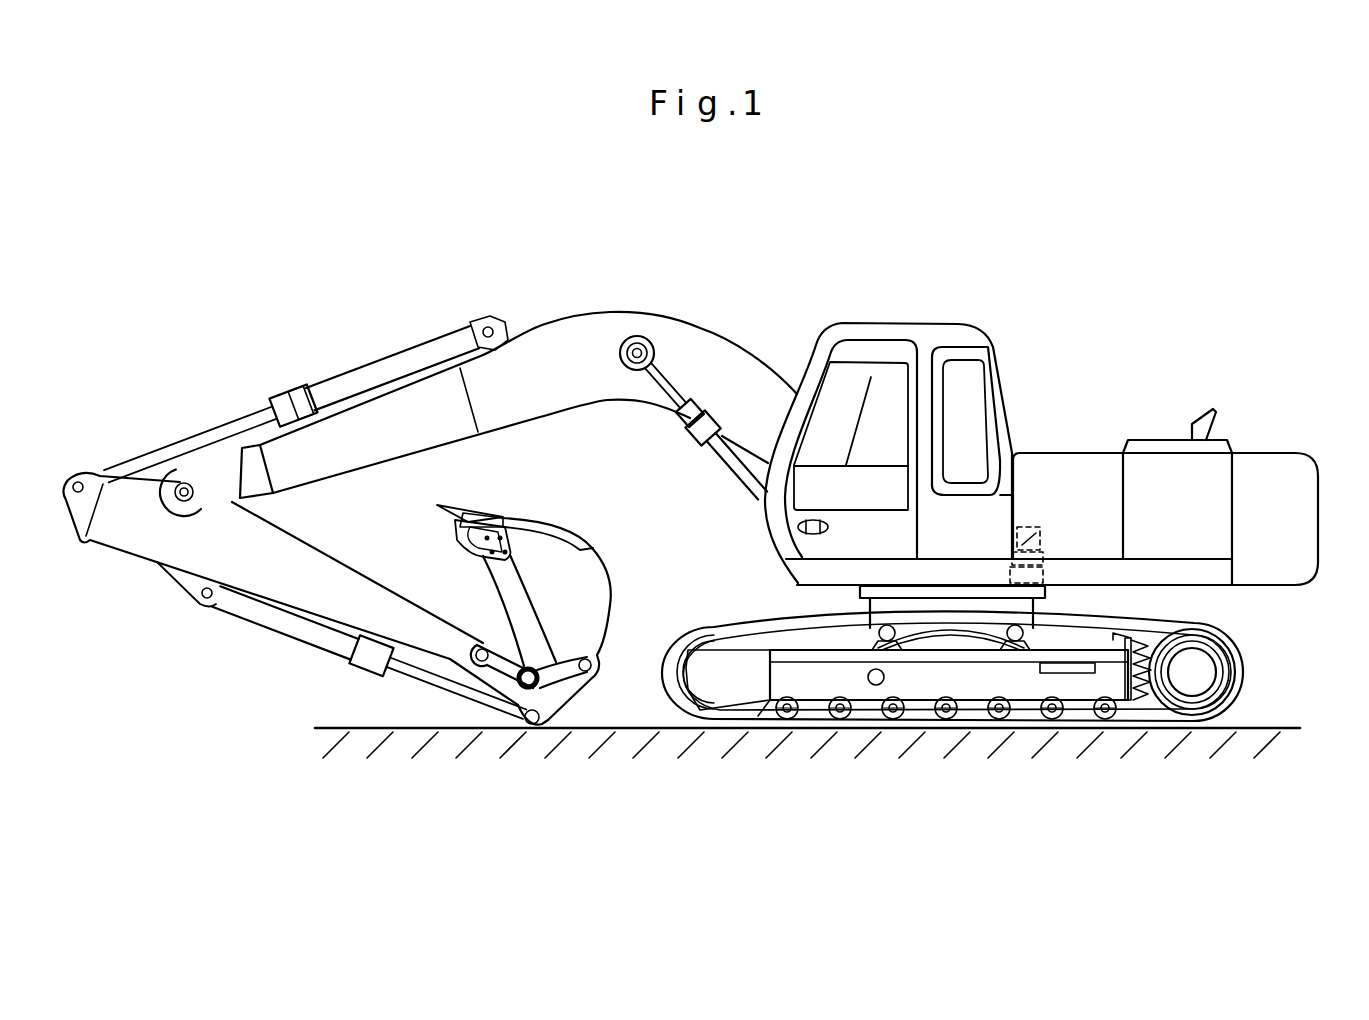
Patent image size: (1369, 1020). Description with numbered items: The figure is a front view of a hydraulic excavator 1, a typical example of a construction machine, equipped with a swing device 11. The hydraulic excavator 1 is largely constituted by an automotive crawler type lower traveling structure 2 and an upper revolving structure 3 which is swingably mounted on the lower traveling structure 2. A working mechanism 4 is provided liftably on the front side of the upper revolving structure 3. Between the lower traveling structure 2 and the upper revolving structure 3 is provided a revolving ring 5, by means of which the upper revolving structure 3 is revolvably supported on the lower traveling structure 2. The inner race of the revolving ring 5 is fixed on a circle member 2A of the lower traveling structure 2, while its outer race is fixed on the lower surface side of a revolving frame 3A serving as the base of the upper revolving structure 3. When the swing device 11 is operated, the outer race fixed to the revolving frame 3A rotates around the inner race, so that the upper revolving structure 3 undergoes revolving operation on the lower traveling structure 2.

The hydraulic excavator 1 is at (880, 284).
The lower traveling structure 2 is at (1243, 665).
The circle member 2A is at (942, 607).
The upper revolving structure 3 is at (1163, 437).
The revolving frame 3A is at (1175, 580).
The working mechanism 4 is at (593, 352).
The revolving ring 5 is at (856, 597).
The swing device 11 is at (1034, 527).